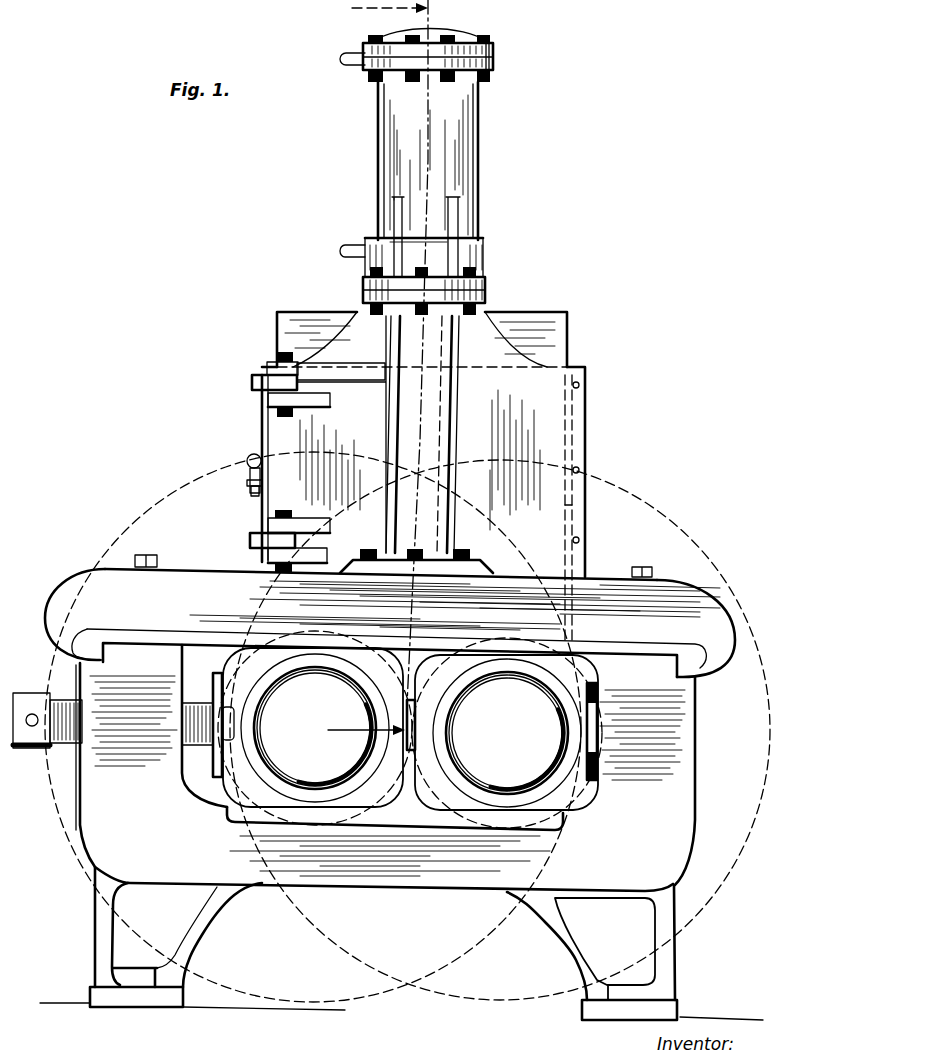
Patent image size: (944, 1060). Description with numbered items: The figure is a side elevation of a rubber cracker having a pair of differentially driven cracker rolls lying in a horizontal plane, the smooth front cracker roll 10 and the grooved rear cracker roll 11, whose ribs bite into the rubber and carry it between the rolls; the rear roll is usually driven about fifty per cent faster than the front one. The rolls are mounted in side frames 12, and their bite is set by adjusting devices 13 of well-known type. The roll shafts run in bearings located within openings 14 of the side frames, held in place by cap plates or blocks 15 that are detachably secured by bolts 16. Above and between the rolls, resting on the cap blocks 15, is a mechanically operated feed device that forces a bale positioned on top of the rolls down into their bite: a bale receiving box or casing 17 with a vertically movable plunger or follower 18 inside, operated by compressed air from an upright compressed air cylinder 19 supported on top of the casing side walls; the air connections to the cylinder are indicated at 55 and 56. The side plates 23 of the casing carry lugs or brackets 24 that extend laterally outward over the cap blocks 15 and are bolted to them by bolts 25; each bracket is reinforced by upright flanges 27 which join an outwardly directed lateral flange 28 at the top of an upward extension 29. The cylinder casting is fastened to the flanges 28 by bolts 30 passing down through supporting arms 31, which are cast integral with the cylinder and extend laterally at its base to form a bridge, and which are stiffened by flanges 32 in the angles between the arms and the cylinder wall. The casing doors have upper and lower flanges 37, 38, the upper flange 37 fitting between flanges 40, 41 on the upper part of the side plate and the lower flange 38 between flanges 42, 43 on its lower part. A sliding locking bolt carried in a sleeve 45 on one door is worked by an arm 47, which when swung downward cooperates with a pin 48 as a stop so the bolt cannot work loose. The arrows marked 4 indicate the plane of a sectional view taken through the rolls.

The section line 4- 4 is at (368, 371).
The front cracker roll 10 is at (385, 825).
The rear cracker roll 11 is at (583, 808).
The side frames 12 is at (401, 831).
The adjusting devices 13 is at (26, 750).
The openings 14 is at (200, 792).
The cap plates or blocks 15 is at (390, 623).
The bolts 16 is at (160, 556).
The bale receiving box or casing 17 is at (550, 437).
The plunger or follower 18 is at (422, 339).
The compressed air cylinder 19 is at (479, 143).
The side plates 23 is at (288, 447).
The lugs or brackets 24 is at (424, 566).
The bolts 25 is at (476, 556).
The upright flanges 27 is at (389, 405).
The lateral flange 28 is at (488, 298).
The upward extension 29 is at (515, 318).
The bolts 30 is at (366, 274).
The supporting arms 31 is at (365, 283).
The flanges 32 is at (452, 217).
The upper flange 37 is at (262, 380).
The lower flange 38 is at (262, 544).
The flange 40 is at (285, 365).
The flange 41 is at (306, 401).
The flange 42 is at (298, 527).
The flange 43 is at (309, 557).
The sleeve 45 is at (247, 458).
The arm 47 is at (252, 489).
The pin 48 is at (252, 484).
The compressed air connection 55 is at (342, 56).
The compressed air connection 56 is at (342, 247).